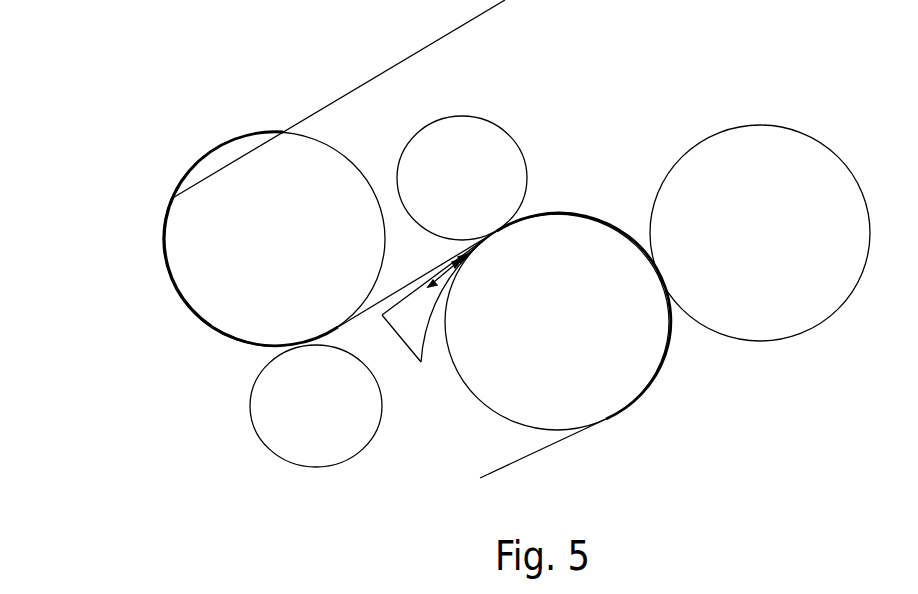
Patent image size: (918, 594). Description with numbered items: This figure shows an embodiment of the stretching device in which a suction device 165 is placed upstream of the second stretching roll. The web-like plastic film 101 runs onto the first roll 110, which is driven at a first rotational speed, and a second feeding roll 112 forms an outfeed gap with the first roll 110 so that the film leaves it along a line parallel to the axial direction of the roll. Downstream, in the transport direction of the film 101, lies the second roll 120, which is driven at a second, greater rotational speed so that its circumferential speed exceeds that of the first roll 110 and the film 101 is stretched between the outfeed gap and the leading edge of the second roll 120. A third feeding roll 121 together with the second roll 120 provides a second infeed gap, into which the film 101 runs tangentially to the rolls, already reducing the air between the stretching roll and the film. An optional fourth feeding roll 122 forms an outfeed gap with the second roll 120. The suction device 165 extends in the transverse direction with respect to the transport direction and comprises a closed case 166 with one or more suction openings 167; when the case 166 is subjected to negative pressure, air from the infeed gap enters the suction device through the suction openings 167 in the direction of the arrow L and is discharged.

The web-like plastic film 101 is at (340, 85).
The first roll 110 is at (203, 243).
The second feeding roll 112 is at (290, 412).
The second roll 120 is at (613, 377).
The third feeding roll 121 is at (507, 188).
The fourth feeding roll 122 is at (743, 298).
The suction device 165 is at (432, 354).
The closed case 166 is at (421, 362).
The suction openings 167 is at (465, 263).
The direction of the arrow L is at (443, 289).